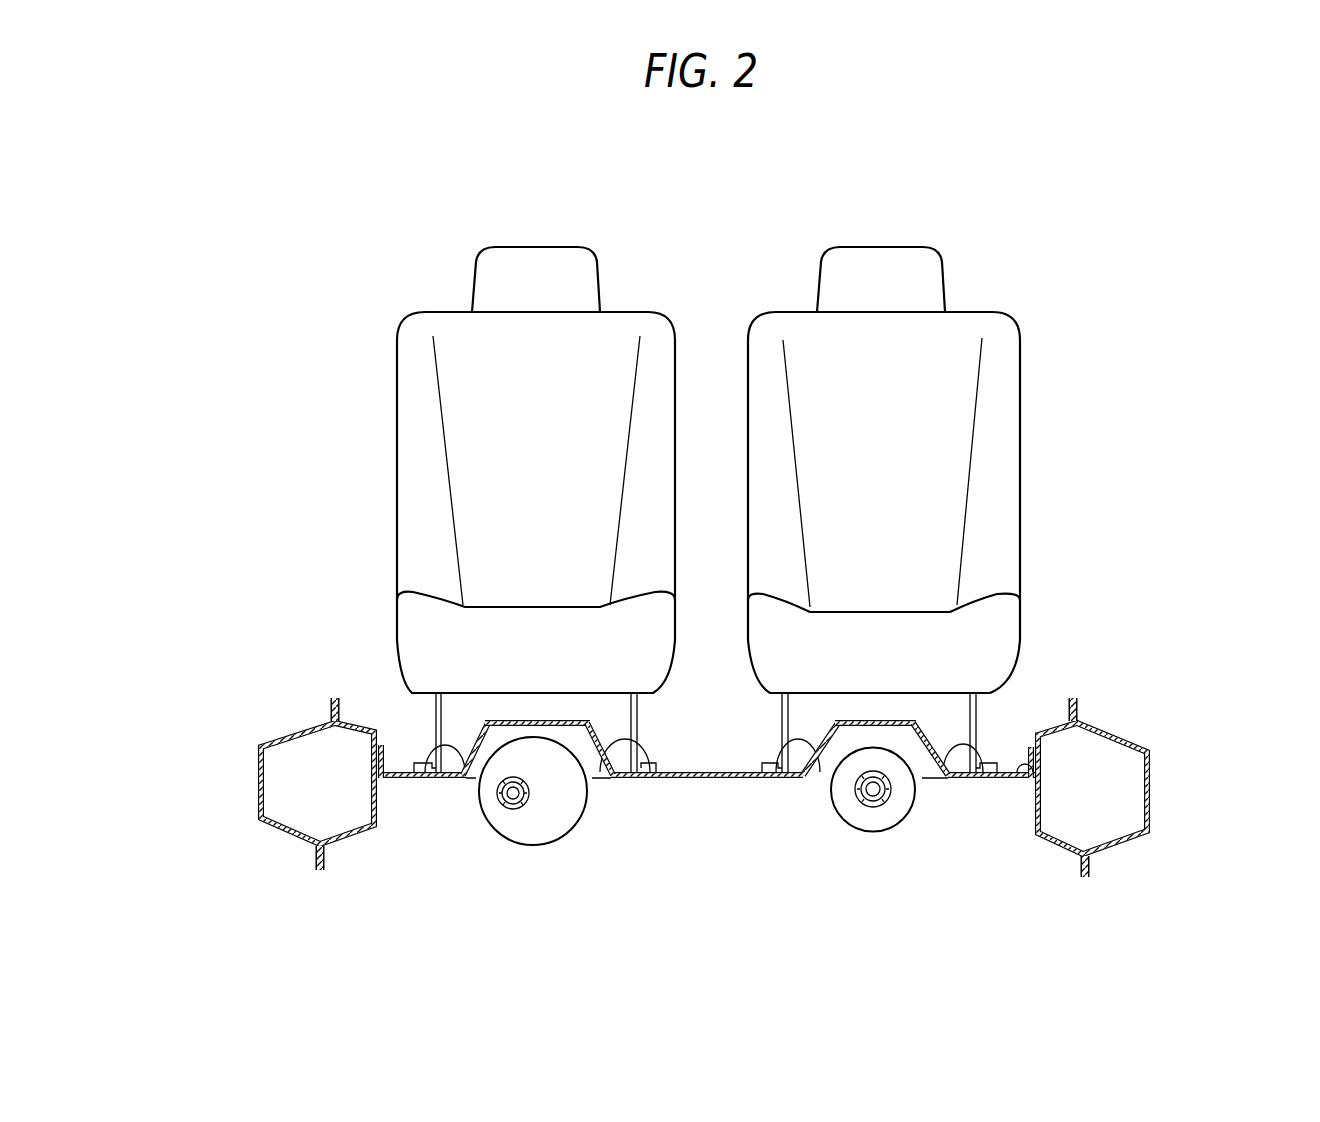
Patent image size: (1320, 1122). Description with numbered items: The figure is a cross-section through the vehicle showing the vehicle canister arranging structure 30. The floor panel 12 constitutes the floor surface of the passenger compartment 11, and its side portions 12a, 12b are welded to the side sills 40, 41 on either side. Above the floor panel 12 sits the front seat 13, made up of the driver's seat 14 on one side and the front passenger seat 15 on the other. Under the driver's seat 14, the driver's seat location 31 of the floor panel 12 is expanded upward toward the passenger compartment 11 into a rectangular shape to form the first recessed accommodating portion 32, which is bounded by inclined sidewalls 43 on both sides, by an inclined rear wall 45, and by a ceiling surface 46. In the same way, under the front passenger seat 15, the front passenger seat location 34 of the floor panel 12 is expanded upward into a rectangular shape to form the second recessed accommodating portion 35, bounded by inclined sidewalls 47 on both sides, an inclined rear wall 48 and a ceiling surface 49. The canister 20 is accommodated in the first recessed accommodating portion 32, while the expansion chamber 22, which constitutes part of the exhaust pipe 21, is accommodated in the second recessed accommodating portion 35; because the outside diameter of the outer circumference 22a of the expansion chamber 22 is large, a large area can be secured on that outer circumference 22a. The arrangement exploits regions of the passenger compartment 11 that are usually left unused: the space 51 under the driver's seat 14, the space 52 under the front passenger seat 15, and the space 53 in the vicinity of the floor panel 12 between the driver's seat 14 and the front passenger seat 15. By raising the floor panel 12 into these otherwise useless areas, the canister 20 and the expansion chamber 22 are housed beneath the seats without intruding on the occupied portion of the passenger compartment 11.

The passenger compartment 11 is at (1059, 203).
The floor panel 12 is at (697, 781).
The side portion of floor panel 12a is at (387, 757).
The side portion of floor panel 12b is at (1033, 748).
The front seat 13 is at (808, 203).
The driver's seat 14 is at (640, 312).
The front passenger seat 15 is at (792, 310).
The canister 20 is at (540, 845).
The exhaust pipe 21 is at (913, 817).
The expansion chamber 22 is at (842, 807).
The outer circumference of expansion chamber 22a is at (867, 832).
The vehicle canister arranging structure 30 is at (490, 857).
The driver's seat location 31 is at (497, 703).
The first recessed accommodating portion 32 is at (417, 762).
The front passenger seat location 34 is at (930, 708).
The second recessed accommodating portion 35 is at (997, 767).
The side sill 40 is at (258, 777).
The side sill 41 is at (1152, 790).
The inclined sidewall 43 is at (420, 779).
The inclined rear wall 45 is at (577, 738).
The ceiling surface 46 is at (567, 720).
The inclined sidewall 47 is at (765, 781).
The inclined rear wall 48 is at (848, 738).
The ceiling surface 49 is at (866, 720).
The space under driver's seat 51 is at (487, 733).
The space under front passenger seat 52 is at (910, 750).
The space between seats 53 is at (708, 741).